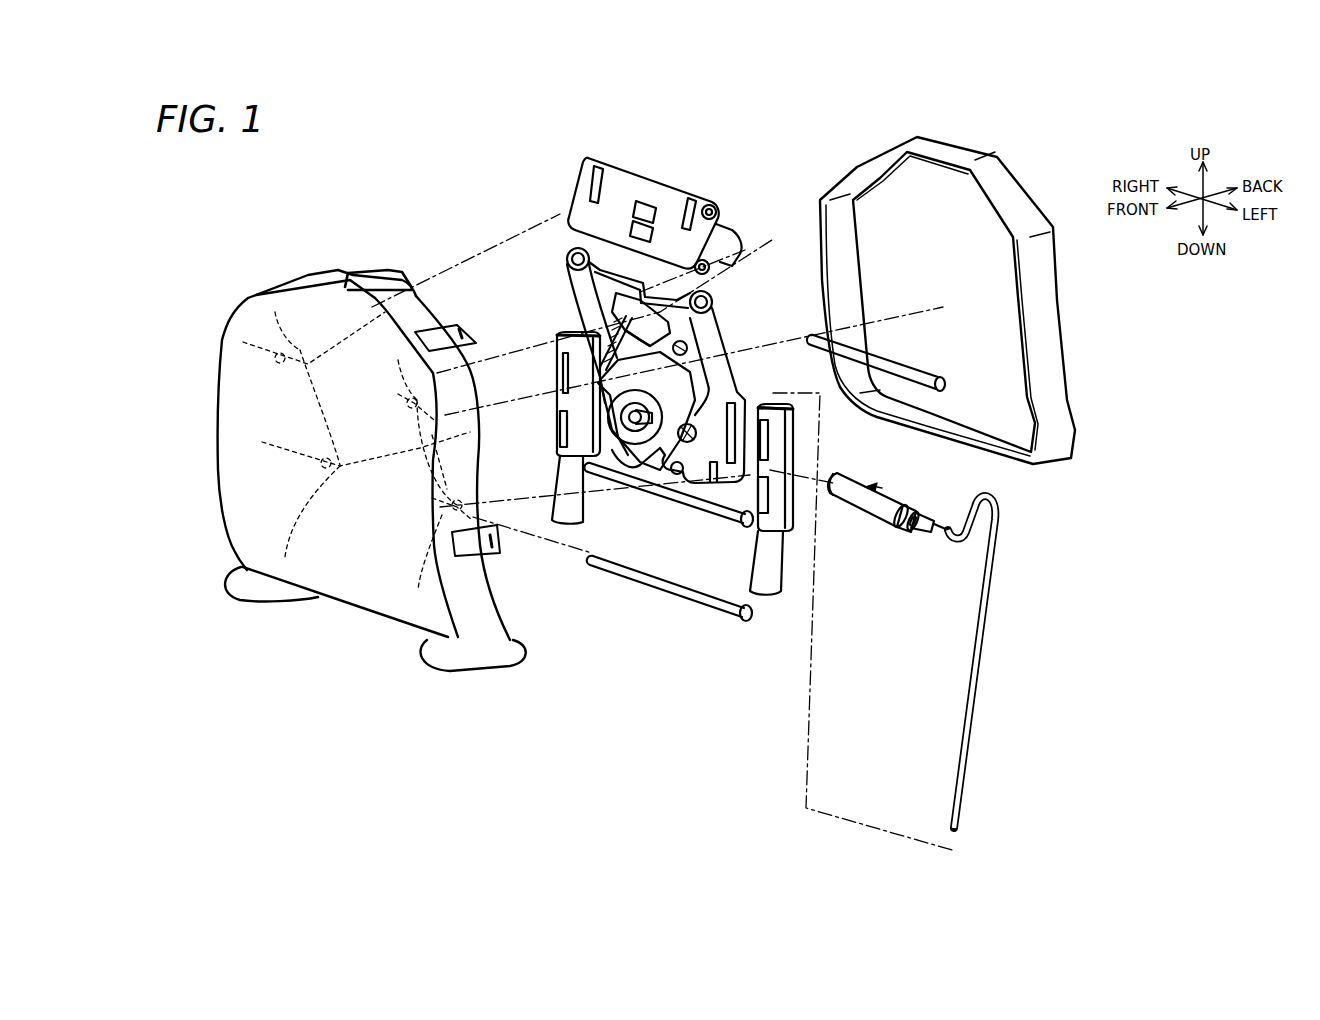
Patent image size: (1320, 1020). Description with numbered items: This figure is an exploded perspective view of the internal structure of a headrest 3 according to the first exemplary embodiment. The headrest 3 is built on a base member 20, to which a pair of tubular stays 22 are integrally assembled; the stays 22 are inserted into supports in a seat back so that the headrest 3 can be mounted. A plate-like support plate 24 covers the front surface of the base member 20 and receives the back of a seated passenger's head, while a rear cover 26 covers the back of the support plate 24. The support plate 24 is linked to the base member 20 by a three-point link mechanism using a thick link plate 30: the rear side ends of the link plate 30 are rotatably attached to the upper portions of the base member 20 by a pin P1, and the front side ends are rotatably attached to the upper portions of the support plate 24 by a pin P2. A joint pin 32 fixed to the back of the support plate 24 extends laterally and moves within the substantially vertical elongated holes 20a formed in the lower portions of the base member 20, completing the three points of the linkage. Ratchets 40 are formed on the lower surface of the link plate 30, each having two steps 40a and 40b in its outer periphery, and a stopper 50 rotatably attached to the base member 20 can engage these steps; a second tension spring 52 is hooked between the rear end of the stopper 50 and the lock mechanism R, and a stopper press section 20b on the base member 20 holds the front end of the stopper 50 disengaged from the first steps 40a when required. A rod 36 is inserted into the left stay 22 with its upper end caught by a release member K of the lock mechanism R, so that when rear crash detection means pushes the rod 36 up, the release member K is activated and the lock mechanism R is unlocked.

The headrest 3 is at (262, 240).
The support plate 24 is at (232, 400).
The rear cover 26 is at (1048, 302).
The link plate 30 is at (645, 185).
The ratchet 40 is at (714, 235).
The first step 40a is at (722, 270).
The second step 40b is at (712, 268).
The base member 20 is at (727, 330).
The elongated hole 20a is at (763, 406).
The stopper press section 20b is at (690, 354).
The stopper 50 is at (630, 335).
The second tension spring 52 is at (618, 330).
The lock mechanism R is at (615, 447).
The stay 22 is at (566, 468).
The joint pin 32 is at (628, 572).
The pin P2 is at (662, 493).
The pin P1 is at (810, 338).
The release member K is at (858, 503).
The rod 36 is at (998, 565).